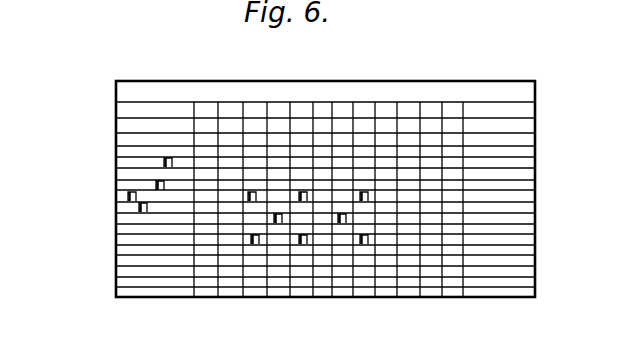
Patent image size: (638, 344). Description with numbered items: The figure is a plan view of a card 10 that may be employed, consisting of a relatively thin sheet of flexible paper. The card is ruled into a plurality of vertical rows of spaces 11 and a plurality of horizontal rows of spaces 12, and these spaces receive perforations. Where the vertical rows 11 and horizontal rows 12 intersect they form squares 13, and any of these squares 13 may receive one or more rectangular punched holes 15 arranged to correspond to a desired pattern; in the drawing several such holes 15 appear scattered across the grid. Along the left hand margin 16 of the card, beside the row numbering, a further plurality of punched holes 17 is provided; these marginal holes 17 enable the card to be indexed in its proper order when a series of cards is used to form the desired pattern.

The chart board 10 is at (531, 81).
The vertical rows of spaces 11 is at (444, 137).
The horizontal rows of spaces 12 is at (120, 140).
The squares 13 is at (238, 259).
The rectangular punched holes 15 is at (341, 226).
The left hand margin 16 is at (145, 235).
The punched holes 17 is at (128, 197).